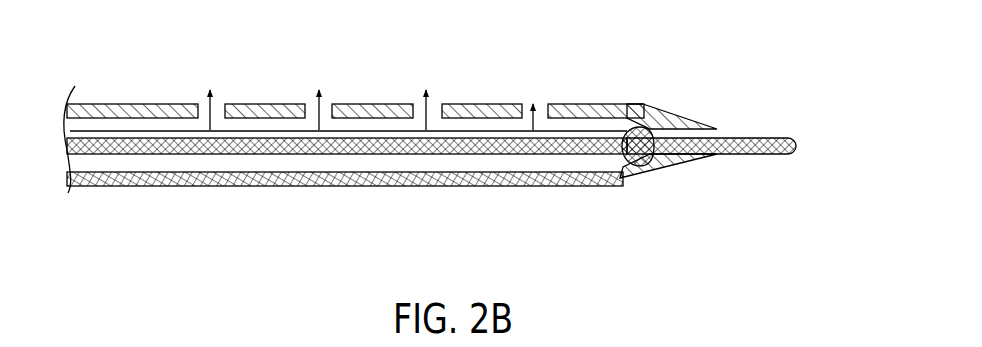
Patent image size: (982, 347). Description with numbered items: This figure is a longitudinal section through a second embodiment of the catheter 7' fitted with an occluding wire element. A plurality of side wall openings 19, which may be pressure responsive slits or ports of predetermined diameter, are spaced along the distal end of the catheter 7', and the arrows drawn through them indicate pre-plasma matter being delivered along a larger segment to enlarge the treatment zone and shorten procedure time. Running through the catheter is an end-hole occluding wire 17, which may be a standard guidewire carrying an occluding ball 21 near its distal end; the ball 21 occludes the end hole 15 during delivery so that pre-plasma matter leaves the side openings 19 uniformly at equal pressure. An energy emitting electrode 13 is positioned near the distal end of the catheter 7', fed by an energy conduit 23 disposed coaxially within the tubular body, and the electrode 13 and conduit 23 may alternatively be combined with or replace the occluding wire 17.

The catheter 7' is at (632, 81).
The energy emitting electrode 13 is at (683, 180).
The end hole 15 is at (729, 157).
The end-hole occluding wire 17 is at (247, 152).
The side wall openings 19 is at (540, 96).
The occluding ball 21 is at (628, 182).
The energy conduit 23 is at (405, 184).